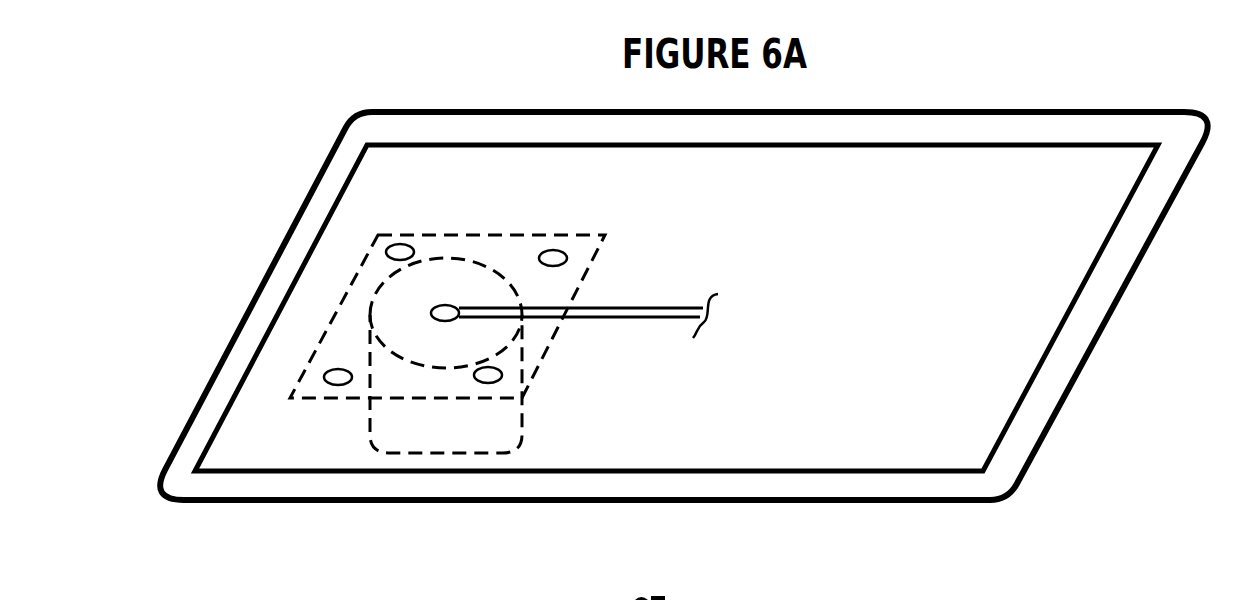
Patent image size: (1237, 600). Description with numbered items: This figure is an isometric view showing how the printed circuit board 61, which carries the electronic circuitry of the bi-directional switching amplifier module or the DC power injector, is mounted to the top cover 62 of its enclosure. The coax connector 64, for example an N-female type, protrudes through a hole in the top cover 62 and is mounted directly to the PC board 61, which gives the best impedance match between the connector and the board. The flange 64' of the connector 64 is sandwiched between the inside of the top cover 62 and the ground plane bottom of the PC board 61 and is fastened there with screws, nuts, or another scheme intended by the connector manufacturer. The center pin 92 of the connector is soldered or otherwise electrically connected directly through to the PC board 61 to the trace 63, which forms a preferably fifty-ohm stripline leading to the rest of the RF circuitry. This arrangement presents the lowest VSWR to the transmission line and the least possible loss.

The printed circuit board 61 is at (617, 390).
The top cover 62 is at (833, 503).
The trace 63 is at (636, 307).
The coax connector 64 is at (402, 407).
The flange 64' is at (376, 316).
The center pin 92 is at (443, 305).